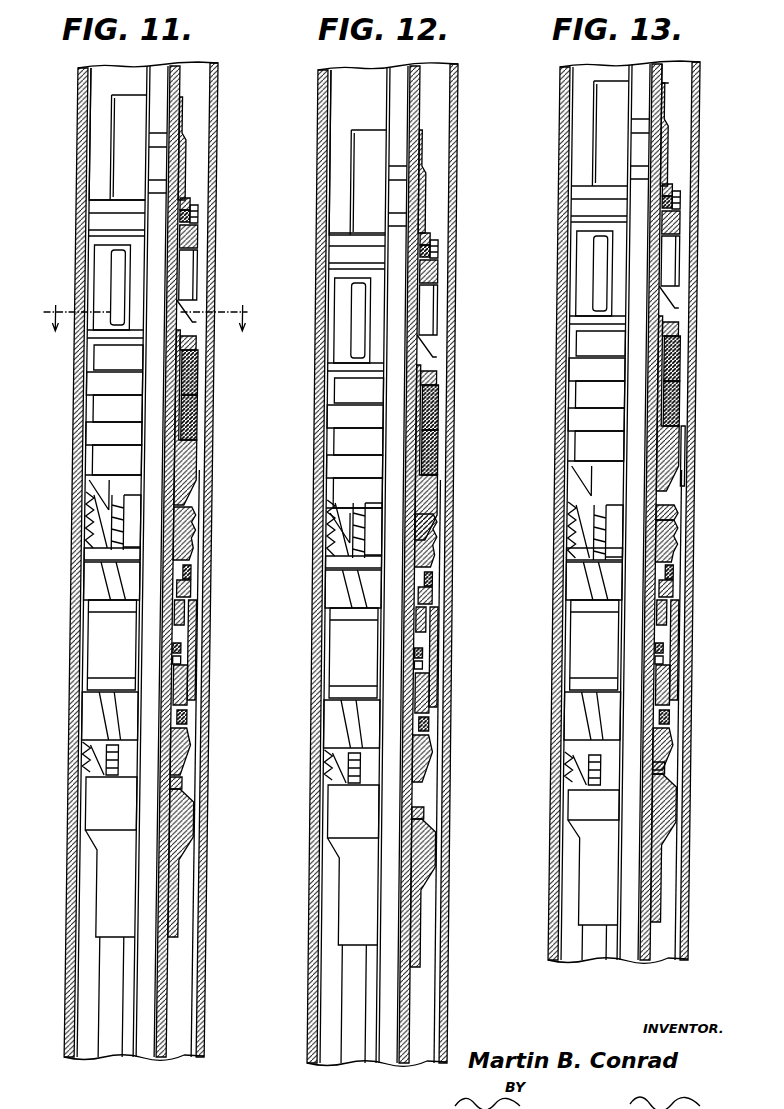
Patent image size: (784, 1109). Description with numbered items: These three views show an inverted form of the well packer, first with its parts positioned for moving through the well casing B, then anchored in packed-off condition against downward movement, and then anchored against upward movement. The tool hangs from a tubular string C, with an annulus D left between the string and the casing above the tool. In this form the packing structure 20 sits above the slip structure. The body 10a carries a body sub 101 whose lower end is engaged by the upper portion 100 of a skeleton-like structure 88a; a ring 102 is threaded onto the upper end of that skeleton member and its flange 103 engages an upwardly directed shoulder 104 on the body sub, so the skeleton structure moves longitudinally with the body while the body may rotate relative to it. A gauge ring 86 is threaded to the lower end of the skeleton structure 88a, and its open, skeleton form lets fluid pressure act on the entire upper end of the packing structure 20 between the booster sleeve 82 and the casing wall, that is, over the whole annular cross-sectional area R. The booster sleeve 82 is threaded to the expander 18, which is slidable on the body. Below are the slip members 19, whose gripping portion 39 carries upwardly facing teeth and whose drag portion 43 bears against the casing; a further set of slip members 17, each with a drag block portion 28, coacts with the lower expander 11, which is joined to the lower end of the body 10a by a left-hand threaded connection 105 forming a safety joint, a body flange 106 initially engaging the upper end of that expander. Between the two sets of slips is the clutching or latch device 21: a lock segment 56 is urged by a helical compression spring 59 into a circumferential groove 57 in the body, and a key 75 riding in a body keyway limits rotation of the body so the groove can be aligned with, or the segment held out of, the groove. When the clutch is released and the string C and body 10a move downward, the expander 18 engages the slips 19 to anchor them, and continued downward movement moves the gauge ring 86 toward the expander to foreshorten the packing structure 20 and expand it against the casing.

In FIG. 11, the well casing B is at (5, 128).
In FIG. 12, the well casing B is at (298, 566).
In FIG. 13, the well casing B is at (541, 513).
In FIG. 11, the tubular string C is at (95, 134).
In FIG. 12, the tubular string C is at (335, 152).
In FIG. 13, the tubular string C is at (703, 71).
In FIG. 11, the annulus D is at (224, 560).
In FIG. 12, the annulus D is at (464, 563).
In FIG. 13, the annulus D is at (709, 511).
In FIG. 11, the body sub 101 is at (42, 160).
In FIG. 12, the body sub 101 is at (328, 182).
In FIG. 13, the body sub 101 is at (570, 133).
In FIG. 11, the flange 103 is at (221, 190).
In FIG. 12, the flange 103 is at (461, 216).
In FIG. 13, the flange 103 is at (704, 174).
In FIG. 11, the ring 102 is at (221, 203).
In FIG. 12, the ring 102 is at (461, 232).
In FIG. 13, the ring 102 is at (704, 188).
In FIG. 11, the shoulder 104 is at (226, 211).
In FIG. 12, the shoulder 104 is at (466, 245).
In FIG. 13, the shoulder 104 is at (709, 198).
In FIG. 11, the upper portion of skeleton structure 100 is at (220, 236).
In FIG. 12, the upper portion of skeleton structure 100 is at (461, 275).
In FIG. 13, the upper portion of skeleton structure 100 is at (704, 222).
In FIG. 11, the skeleton-like structure 88a is at (218, 286).
In FIG. 12, the skeleton-like structure 88a is at (460, 307).
In FIG. 13, the skeleton-like structure 88a is at (702, 272).
In FIG. 11, the body 10a is at (210, 561).
In FIG. 12, the body 10a is at (451, 564).
In FIG. 13, the body 10a is at (694, 512).
In FIG. 11, the slip members 17 is at (118, 752).
In FIG. 12, the slip members 17 is at (406, 759).
In FIG. 13, the slip members 17 is at (647, 756).
In FIG. 11, the gauge ring 86 is at (216, 347).
In FIG. 12, the gauge ring 86 is at (456, 380).
In FIG. 13, the gauge ring 86 is at (699, 332).
In FIG. 11, the packing structure 20 is at (221, 372).
In FIG. 12, the packing structure 20 is at (457, 407).
In FIG. 13, the packing structure 20 is at (700, 358).
In FIG. 11, the booster sleeve 82 is at (216, 417).
In FIG. 12, the booster sleeve 82 is at (457, 452).
In FIG. 13, the booster sleeve 82 is at (699, 403).
In FIG. 11, the expander 18 is at (213, 417).
In FIG. 12, the expander 18 is at (454, 452).
In FIG. 13, the expander 18 is at (696, 403).
In FIG. 11, the gripping portion 39 is at (14, 515).
In FIG. 12, the gripping portion 39 is at (413, 529).
In FIG. 13, the gripping portion 39 is at (619, 531).
In FIG. 11, the slip members 19 is at (6, 533).
In FIG. 12, the slip members 19 is at (376, 533).
In FIG. 13, the slip members 19 is at (650, 532).
In FIG. 11, the drag portion 43 is at (216, 574).
In FIG. 12, the drag portion 43 is at (457, 576).
In FIG. 13, the drag portion 43 is at (699, 572).
In FIG. 11, the helical compression spring 59 is at (213, 590).
In FIG. 12, the helical compression spring 59 is at (454, 594).
In FIG. 13, the helical compression spring 59 is at (696, 590).
In FIG. 11, the key 75 is at (211, 615).
In FIG. 11, the lock segment 56 is at (103, 648).
In FIG. 12, the lock segment 56 is at (386, 650).
In FIG. 13, the lock segment 56 is at (626, 651).
In FIG. 11, the circumferential groove 57 is at (103, 660).
In FIG. 11, the clutching or latch device 21 is at (217, 650).
In FIG. 12, the clutching or latch device 21 is at (459, 657).
In FIG. 13, the clutching or latch device 21 is at (701, 650).
In FIG. 11, the drag block portion 28 is at (212, 719).
In FIG. 12, the drag block portion 28 is at (454, 722).
In FIG. 13, the drag block portion 28 is at (695, 720).
In FIG. 11, the flange 106 is at (212, 787).
In FIG. 12, the flange 106 is at (454, 815).
In FIG. 13, the flange 106 is at (695, 770).
In FIG. 11, the expander 11 is at (22, 822).
In FIG. 12, the expander 11 is at (318, 924).
In FIG. 13, the expander 11 is at (558, 875).
In FIG. 11, the left-hand threaded connection 105 is at (211, 863).
In FIG. 12, the left-hand threaded connection 105 is at (453, 893).
In FIG. 13, the left-hand threaded connection 105 is at (695, 848).
In FIG. 13, the annular cross-sectional area R is at (680, 456).